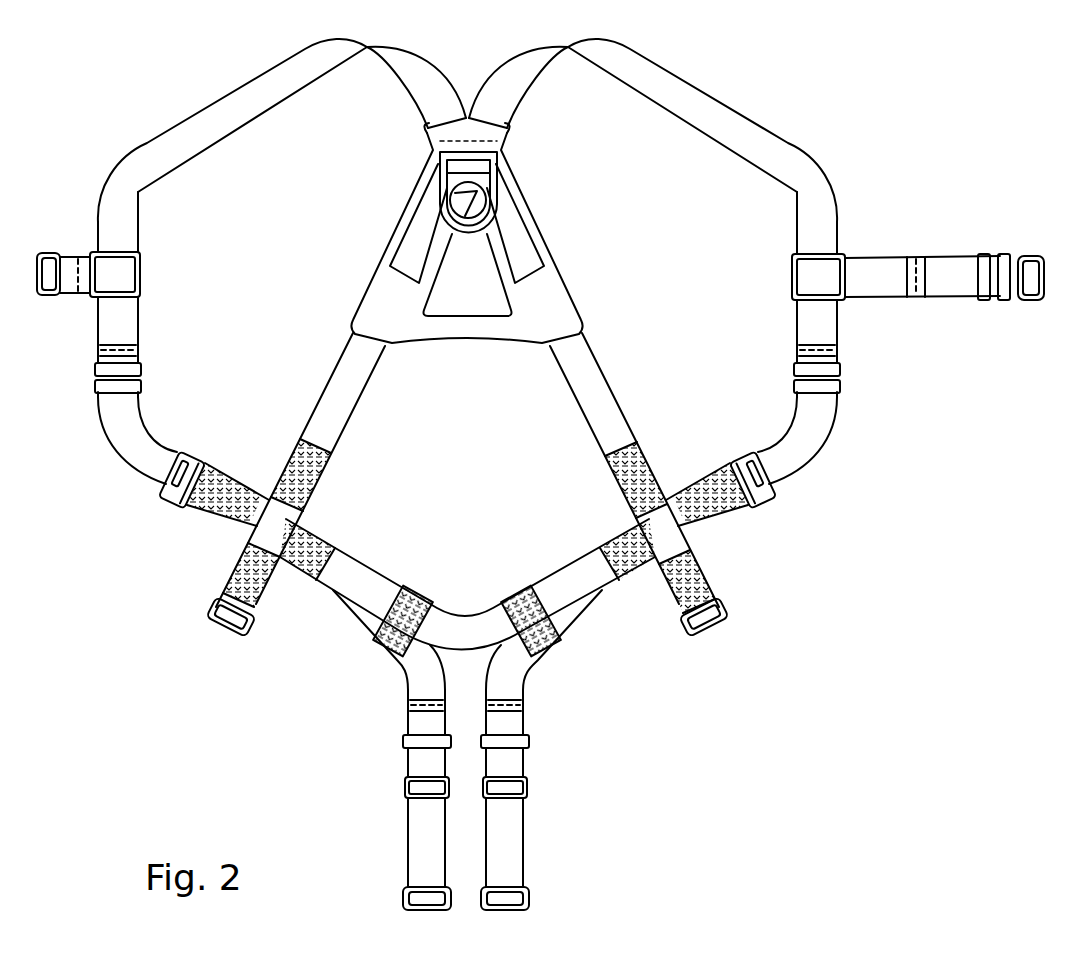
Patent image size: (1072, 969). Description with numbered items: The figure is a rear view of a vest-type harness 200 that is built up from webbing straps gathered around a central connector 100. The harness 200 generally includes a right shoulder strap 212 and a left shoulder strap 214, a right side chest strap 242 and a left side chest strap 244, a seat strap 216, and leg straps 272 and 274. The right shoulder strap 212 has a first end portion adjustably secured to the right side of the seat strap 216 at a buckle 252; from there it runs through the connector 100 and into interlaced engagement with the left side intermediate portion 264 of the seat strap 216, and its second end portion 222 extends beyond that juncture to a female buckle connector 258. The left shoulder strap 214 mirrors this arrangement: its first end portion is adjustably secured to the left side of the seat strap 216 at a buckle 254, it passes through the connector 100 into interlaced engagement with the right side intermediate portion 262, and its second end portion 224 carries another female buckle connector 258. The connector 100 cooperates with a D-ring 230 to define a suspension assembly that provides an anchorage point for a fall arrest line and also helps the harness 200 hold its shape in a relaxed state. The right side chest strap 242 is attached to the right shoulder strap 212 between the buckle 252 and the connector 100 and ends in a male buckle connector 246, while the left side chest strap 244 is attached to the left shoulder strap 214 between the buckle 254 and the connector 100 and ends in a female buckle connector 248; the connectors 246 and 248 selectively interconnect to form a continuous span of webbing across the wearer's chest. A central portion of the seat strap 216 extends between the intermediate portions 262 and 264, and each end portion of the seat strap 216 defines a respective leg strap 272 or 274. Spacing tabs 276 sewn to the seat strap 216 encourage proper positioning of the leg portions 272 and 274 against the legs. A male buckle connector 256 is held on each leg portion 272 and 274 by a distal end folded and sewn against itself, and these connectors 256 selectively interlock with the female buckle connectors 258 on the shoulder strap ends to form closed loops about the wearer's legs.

The connector 100 is at (506, 233).
The harness 200 is at (535, 475).
The right shoulder strap 212 is at (668, 93).
The left shoulder strap 214 is at (232, 120).
The seat strap 216 is at (465, 617).
The second end portion of the right shoulder strap 222 is at (272, 566).
The second end portion of the left shoulder strap 224 is at (660, 566).
The D-ring 230 is at (495, 218).
The right side chest strap 242 is at (893, 268).
The left side chest strap 244 is at (70, 292).
The male buckle connector 246 is at (1030, 303).
The female buckle connector 248 is at (38, 248).
The buckle 252 is at (767, 500).
The buckle 254 is at (168, 498).
The male buckle connector 256 is at (400, 900).
The female buckle connector 258 is at (213, 620).
The right side intermediate portion 262 is at (680, 497).
The left side intermediate portion 264 is at (257, 494).
The leg strap 272 is at (515, 828).
The leg strap 274 is at (415, 830).
The spacing tabs 276 is at (412, 602).